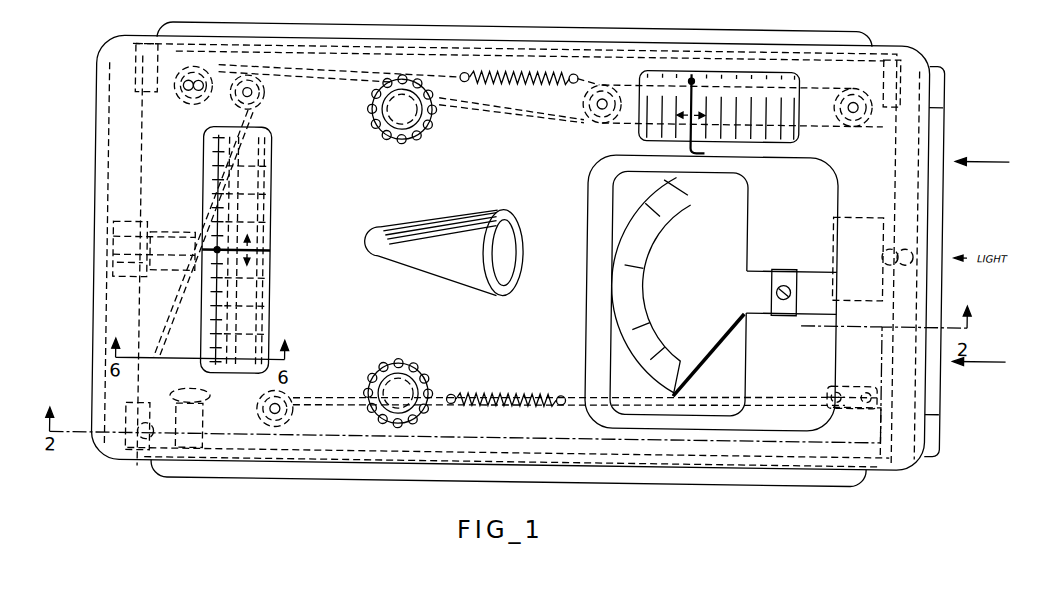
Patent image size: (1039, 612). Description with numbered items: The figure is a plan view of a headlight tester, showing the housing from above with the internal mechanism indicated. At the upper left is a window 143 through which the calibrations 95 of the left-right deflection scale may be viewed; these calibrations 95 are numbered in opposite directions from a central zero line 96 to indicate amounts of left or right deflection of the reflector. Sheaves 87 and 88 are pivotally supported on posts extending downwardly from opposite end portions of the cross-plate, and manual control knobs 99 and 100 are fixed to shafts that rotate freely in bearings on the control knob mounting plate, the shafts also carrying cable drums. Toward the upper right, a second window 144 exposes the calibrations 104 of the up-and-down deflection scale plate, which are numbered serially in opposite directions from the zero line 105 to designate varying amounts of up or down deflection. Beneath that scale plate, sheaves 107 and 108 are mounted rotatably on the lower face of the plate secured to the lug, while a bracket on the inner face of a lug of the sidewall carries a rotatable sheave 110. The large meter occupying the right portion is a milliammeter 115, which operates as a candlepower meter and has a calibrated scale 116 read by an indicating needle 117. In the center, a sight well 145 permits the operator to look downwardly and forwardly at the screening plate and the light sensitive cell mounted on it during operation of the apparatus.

The sheave 87 is at (265, 97).
The sheave 88 is at (283, 391).
The calibrations 95 is at (274, 152).
The central zero line 96 is at (274, 246).
The manual control knob 99 is at (429, 125).
The manual control knob 100 is at (413, 374).
The calibrations 104 is at (759, 134).
The zero line 105 is at (714, 118).
The sheave 107 is at (583, 96).
The sheave 108 is at (861, 72).
The rotatable sheave 110 is at (829, 383).
The milliammeter 115 is at (599, 293).
The calibrated scale 116 is at (642, 272).
The indicating needle 117 is at (725, 331).
The window 143 is at (274, 195).
The window 144 is at (643, 122).
The sight well 145 is at (483, 207).